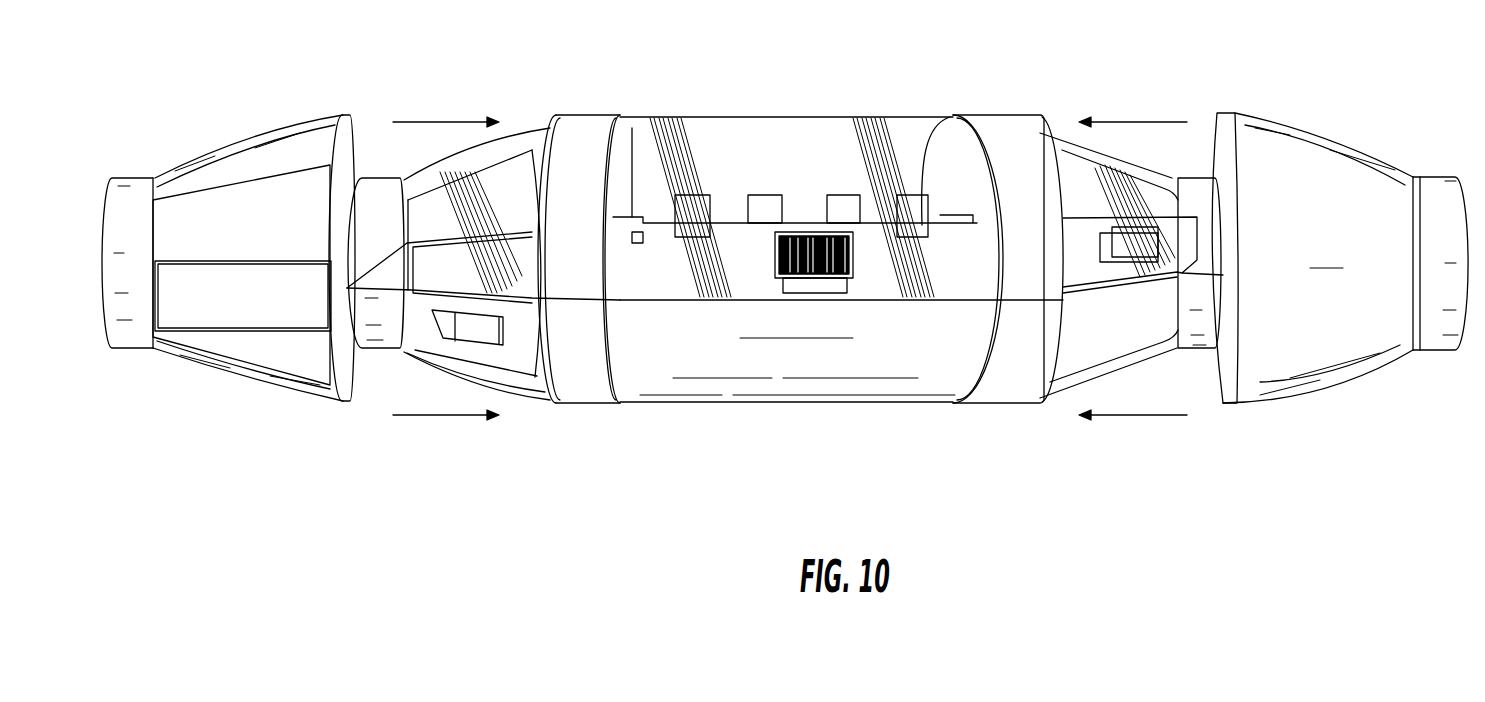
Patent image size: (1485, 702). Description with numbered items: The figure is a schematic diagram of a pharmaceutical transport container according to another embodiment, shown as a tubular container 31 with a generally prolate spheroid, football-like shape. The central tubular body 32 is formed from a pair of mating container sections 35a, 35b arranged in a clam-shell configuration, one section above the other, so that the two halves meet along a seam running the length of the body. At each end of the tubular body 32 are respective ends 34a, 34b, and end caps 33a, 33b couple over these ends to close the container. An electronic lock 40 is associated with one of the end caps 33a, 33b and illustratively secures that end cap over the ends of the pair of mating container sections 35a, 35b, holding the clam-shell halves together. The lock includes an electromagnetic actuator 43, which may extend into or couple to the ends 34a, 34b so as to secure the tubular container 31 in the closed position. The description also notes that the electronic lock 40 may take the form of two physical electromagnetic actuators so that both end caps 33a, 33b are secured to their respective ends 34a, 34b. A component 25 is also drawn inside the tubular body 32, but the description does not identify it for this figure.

The electronic component / sensor module 25 is at (835, 276).
The tubular container 31 is at (918, 96).
The tubular body 32 is at (715, 117).
The end cap 33a is at (184, 156).
The end cap 33b is at (1320, 132).
The end of the tubular body 34a is at (378, 178).
The end of the tubular body 34b is at (1198, 352).
The mating container section 35a is at (390, 178).
The mating container section 35b is at (380, 350).
The electronic lock 40 is at (247, 196).
The electromagnetic actuator 43 is at (233, 331).